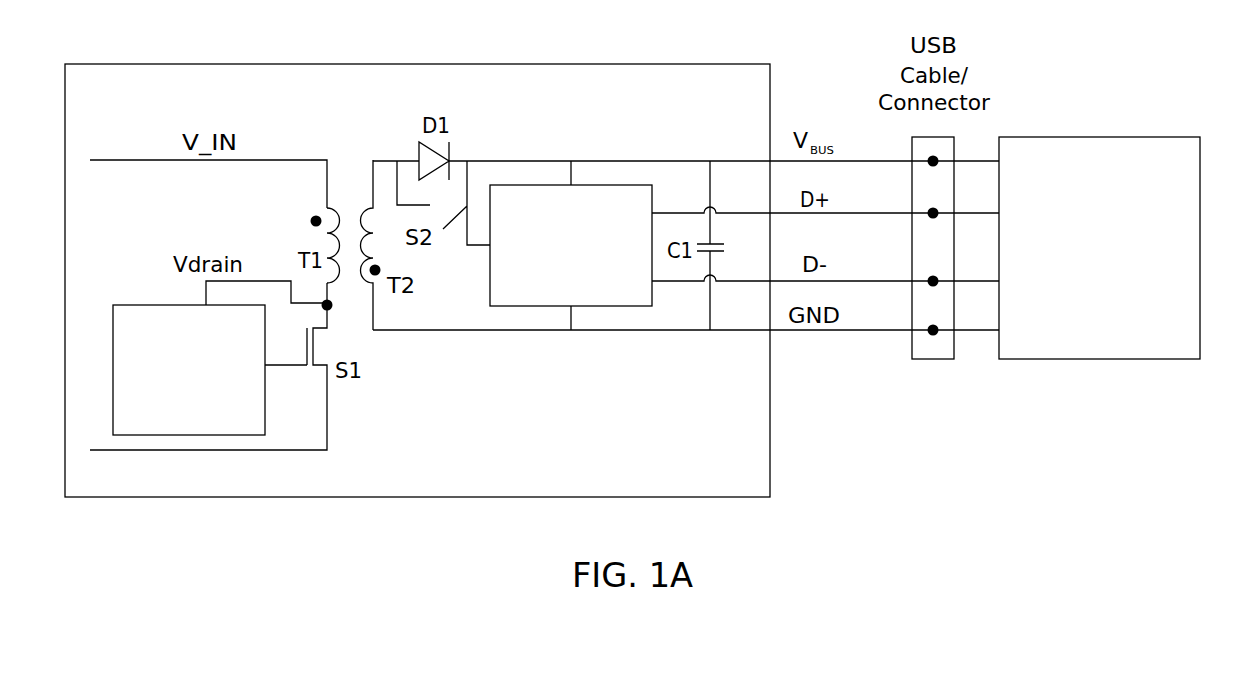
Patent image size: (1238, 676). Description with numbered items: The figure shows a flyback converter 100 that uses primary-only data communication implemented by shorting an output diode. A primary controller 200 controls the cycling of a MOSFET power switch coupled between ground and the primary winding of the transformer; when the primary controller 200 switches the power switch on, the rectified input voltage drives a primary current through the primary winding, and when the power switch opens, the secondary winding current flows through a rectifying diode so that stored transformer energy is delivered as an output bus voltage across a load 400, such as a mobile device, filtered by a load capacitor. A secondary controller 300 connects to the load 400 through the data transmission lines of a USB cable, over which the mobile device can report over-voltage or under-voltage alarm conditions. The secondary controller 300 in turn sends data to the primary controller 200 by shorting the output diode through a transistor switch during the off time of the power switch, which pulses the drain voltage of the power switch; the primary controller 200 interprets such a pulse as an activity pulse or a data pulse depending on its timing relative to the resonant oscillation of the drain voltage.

The flyback converter 100 is at (535, 55).
The primary controller 200 is at (213, 411).
The secondary controller 300 is at (595, 284).
The load 400 is at (1123, 289).